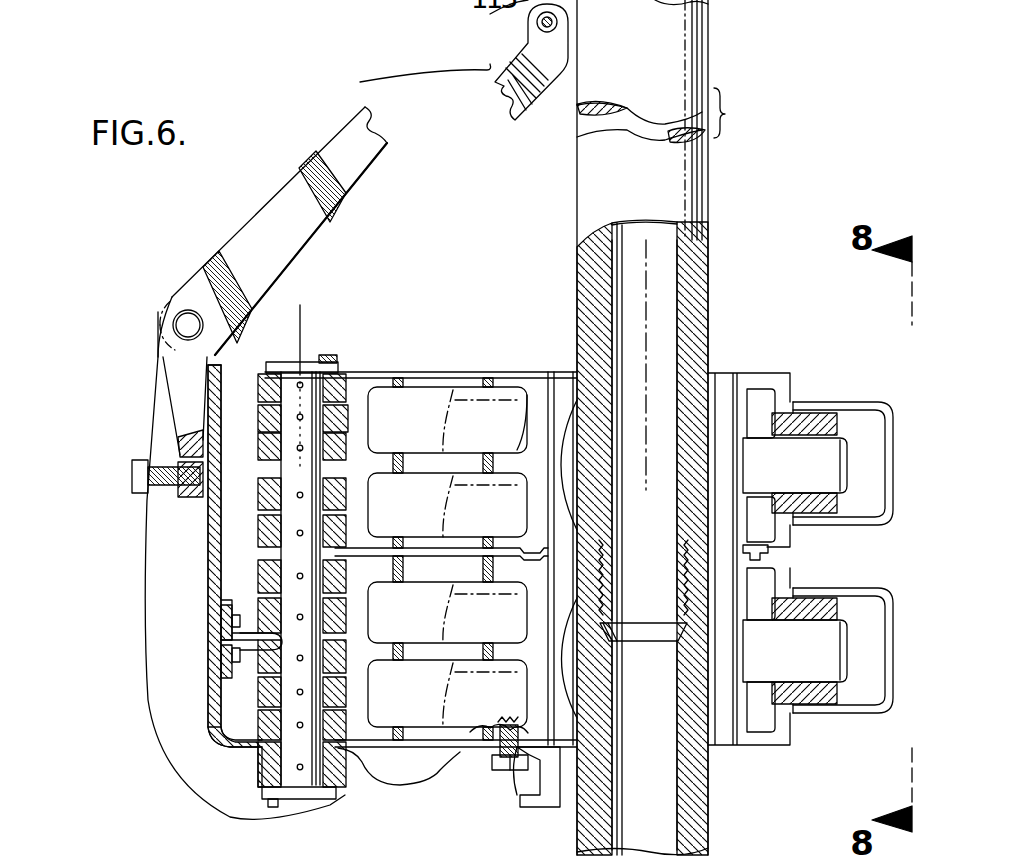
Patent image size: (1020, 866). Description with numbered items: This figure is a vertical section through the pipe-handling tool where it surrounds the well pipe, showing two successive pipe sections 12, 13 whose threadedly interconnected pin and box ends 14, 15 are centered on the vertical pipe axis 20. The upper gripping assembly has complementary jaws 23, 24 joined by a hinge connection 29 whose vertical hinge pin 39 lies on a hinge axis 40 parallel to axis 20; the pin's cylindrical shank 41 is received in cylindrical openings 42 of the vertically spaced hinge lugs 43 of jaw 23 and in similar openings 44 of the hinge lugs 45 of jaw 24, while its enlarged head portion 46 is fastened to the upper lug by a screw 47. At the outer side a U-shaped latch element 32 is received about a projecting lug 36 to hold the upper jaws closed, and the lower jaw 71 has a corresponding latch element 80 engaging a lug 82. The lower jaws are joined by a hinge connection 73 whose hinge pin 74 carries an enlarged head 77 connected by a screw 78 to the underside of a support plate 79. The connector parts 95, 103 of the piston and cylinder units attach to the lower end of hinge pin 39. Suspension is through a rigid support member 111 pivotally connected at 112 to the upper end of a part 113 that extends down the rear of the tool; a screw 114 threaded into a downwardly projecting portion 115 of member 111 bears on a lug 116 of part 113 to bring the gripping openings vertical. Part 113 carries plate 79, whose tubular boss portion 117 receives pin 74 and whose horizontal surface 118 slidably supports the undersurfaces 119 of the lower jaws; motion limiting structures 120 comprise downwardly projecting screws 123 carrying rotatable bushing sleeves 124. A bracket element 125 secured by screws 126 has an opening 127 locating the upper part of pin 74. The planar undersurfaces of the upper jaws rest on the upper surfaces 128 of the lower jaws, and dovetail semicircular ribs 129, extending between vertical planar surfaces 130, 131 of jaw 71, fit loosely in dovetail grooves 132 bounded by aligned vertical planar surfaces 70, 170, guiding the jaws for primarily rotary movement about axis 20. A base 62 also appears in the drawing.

The pipe section 12 is at (700, 353).
The pipe section 13 is at (700, 808).
The pin end 14 is at (630, 552).
The box end 15 is at (604, 608).
The pipe axis 20 is at (647, 292).
The jaw 23 is at (438, 372).
The jaw 24 is at (255, 507).
The hinge connection 29 is at (342, 364).
The latch element 32 is at (797, 417).
The lug 36 is at (842, 451).
The hinge pin 39 is at (266, 370).
The hinge axis 40 is at (307, 362).
The shank 41 is at (350, 381).
The cylindrical openings 42 is at (335, 396).
The hinge lugs 43 is at (258, 400).
The cylindrical openings 44 is at (258, 430).
The hinge lugs 45 is at (343, 487).
The head portion 46 is at (325, 357).
The screw 47 is at (348, 358).
The base 62 is at (303, 861).
The vertical planar surface 70 is at (537, 380).
The jaw 71 is at (748, 733).
The hinge connection 73 is at (255, 695).
The hinge pin 74 is at (313, 693).
The head 77 is at (268, 795).
The screw 78 is at (273, 803).
The support plate 79 is at (250, 757).
The latch element 80 is at (832, 613).
The lug 82 is at (832, 660).
The connector part 95 is at (352, 600).
The connector part 103 is at (362, 597).
The support member 111 is at (307, 165).
The pivotal connection 112 is at (174, 311).
The part 113 is at (160, 407).
The screw 114 is at (132, 487).
The downwardly projecting portion 115 is at (180, 450).
The lug 116 is at (203, 498).
The tubular boss portion 117 is at (338, 773).
The horizontal surface 118 is at (490, 742).
The undersurfaces 119 is at (543, 755).
The motion limiting structure 120 is at (506, 778).
The screws 123 is at (513, 733).
The bushing sleeves 124 is at (485, 742).
The bracket element 125 is at (247, 630).
The screws 126 is at (232, 623).
The opening 127 is at (490, 570).
The upper surfaces 128 is at (780, 553).
The semicircular ribs 129 is at (538, 540).
The vertical planar surface 130 is at (452, 572).
The vertical planar surface 131 is at (772, 565).
The semicircular grooves 132 is at (508, 560).
The vertical planar surface 170 is at (743, 530).